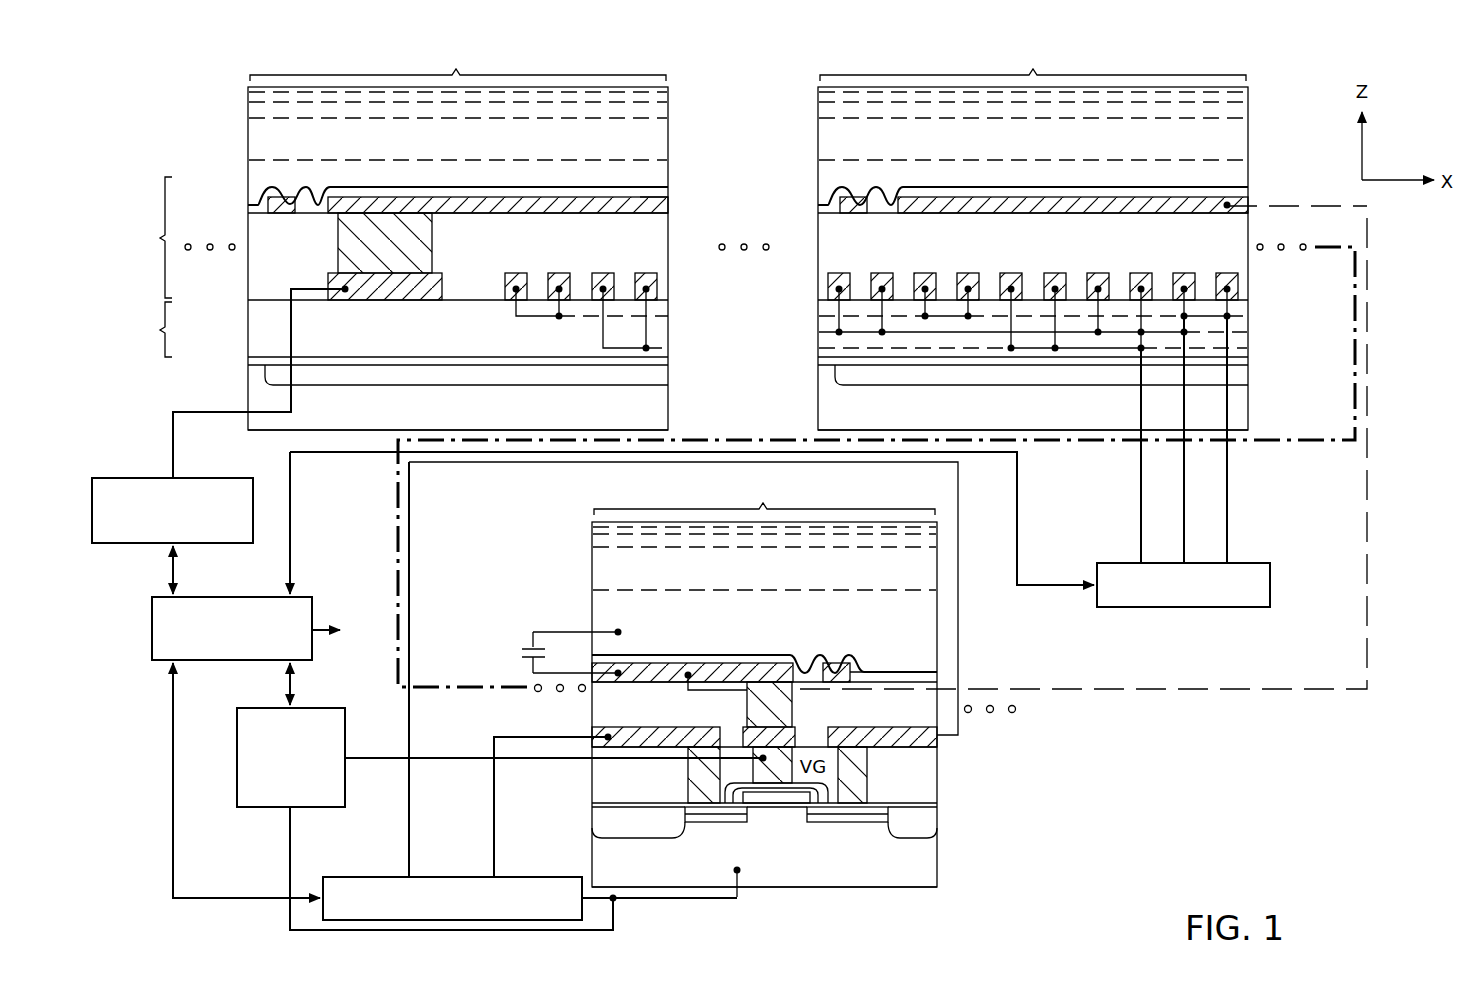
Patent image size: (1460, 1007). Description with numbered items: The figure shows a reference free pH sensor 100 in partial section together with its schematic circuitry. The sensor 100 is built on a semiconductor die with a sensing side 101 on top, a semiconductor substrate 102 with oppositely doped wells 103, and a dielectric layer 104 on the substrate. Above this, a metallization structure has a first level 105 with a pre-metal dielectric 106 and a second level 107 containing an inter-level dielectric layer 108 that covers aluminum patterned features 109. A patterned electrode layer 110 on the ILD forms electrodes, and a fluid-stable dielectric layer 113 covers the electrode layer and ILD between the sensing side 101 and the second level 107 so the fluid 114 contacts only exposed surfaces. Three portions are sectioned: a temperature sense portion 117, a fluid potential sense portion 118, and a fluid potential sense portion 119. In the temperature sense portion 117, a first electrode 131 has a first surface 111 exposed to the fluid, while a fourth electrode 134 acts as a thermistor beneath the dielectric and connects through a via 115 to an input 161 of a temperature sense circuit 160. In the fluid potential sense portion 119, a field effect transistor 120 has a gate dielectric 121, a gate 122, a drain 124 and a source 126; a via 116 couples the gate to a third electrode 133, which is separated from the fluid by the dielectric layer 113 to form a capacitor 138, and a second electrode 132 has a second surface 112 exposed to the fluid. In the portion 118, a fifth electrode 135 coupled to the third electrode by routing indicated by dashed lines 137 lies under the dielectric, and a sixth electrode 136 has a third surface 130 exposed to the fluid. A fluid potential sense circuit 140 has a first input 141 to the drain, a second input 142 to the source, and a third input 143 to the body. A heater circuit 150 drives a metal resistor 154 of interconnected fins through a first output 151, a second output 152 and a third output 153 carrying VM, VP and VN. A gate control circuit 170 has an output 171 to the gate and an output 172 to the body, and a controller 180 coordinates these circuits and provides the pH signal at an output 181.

The sensor 100 is at (163, 103).
The sensing side 101 is at (650, 178).
The semiconductor substrate 102 is at (441, 417).
The oppositely doped wells 103 is at (262, 367).
The dielectric layer 104 is at (248, 361).
The first level 105 is at (142, 329).
The pre-metal dielectric 106 is at (441, 342).
The second level 107 is at (142, 237).
The inter-level dielectric layer 108 is at (255, 290).
The patterned features 109 is at (438, 292).
The patterned electrode layer 110 is at (285, 212).
The first surface 111 is at (276, 186).
The second surface 112 is at (838, 654).
The dielectric layer 113 is at (660, 190).
The fluid 114 is at (441, 147).
The via 115 is at (366, 254).
The via 116 is at (748, 722).
The temperature sense portion 117 is at (429, 235).
The fluid potential sense portion 118 is at (1064, 235).
The fluid potential sense portion 119 is at (683, 674).
The field effect transistor 120 is at (785, 858).
The gate dielectric 121 is at (745, 818).
The gate 122 is at (800, 818).
The drain 124 is at (700, 830).
The source 126 is at (893, 830).
The third surface 130 is at (848, 186).
The first electrode 131 is at (268, 206).
The second electrode 132 is at (855, 672).
The third electrode 133 is at (605, 665).
The fourth electrode 134 is at (668, 198).
The fifth electrode 135 is at (1232, 205).
The sixth electrode 136 is at (840, 206).
The dashed lines 137 is at (1160, 690).
The capacitor 138 is at (518, 630).
The fluid potential sense circuit 140 is at (385, 877).
The first input 141 is at (494, 772).
The second input 142 is at (410, 812).
The third input 143 is at (655, 900).
The heater circuit 150 is at (1195, 608).
The first output 151 is at (1185, 455).
The second output 152 is at (1140, 495).
The third output 153 is at (1228, 505).
The metal resistor 154 is at (664, 290).
The temperature sense circuit 160 is at (112, 544).
The input 161 is at (172, 470).
The gate control circuit 170 is at (262, 808).
The output 171 is at (388, 757).
The output 172 is at (290, 880).
The controller 180 is at (150, 640).
The output 181 is at (322, 637).